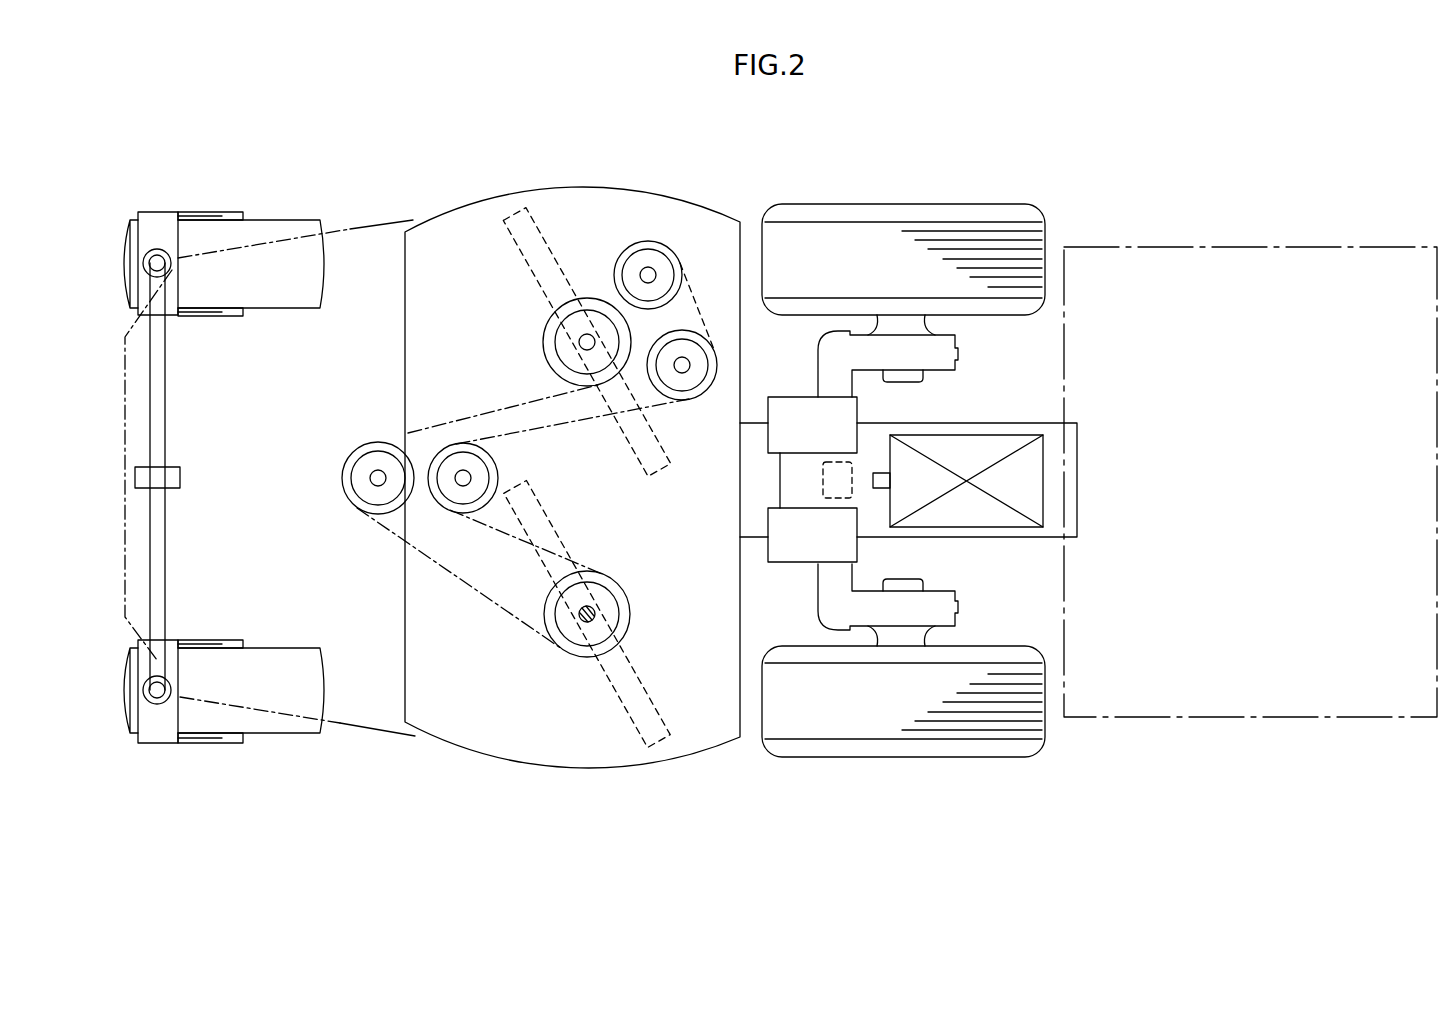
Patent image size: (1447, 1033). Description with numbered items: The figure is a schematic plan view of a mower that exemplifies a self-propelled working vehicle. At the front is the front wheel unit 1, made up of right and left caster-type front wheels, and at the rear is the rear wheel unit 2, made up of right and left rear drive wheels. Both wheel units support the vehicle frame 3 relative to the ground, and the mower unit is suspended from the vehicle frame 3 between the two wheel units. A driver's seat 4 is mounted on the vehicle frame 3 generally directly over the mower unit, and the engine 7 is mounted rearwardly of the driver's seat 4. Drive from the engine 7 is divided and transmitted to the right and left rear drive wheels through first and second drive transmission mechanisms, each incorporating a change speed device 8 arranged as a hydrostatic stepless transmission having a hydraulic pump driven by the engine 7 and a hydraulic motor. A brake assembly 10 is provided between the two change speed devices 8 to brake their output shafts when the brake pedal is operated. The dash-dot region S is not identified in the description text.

The front wheel unit 1 is at (267, 222).
The rear wheel unit 2 is at (892, 205).
The vehicle frame 3 is at (355, 728).
The driver's seat 4 is at (497, 760).
The engine 7 is at (1025, 484).
The change speed device 8 is at (798, 405).
The brake assembly 10 is at (822, 486).
The load carrying space S is at (1200, 718).